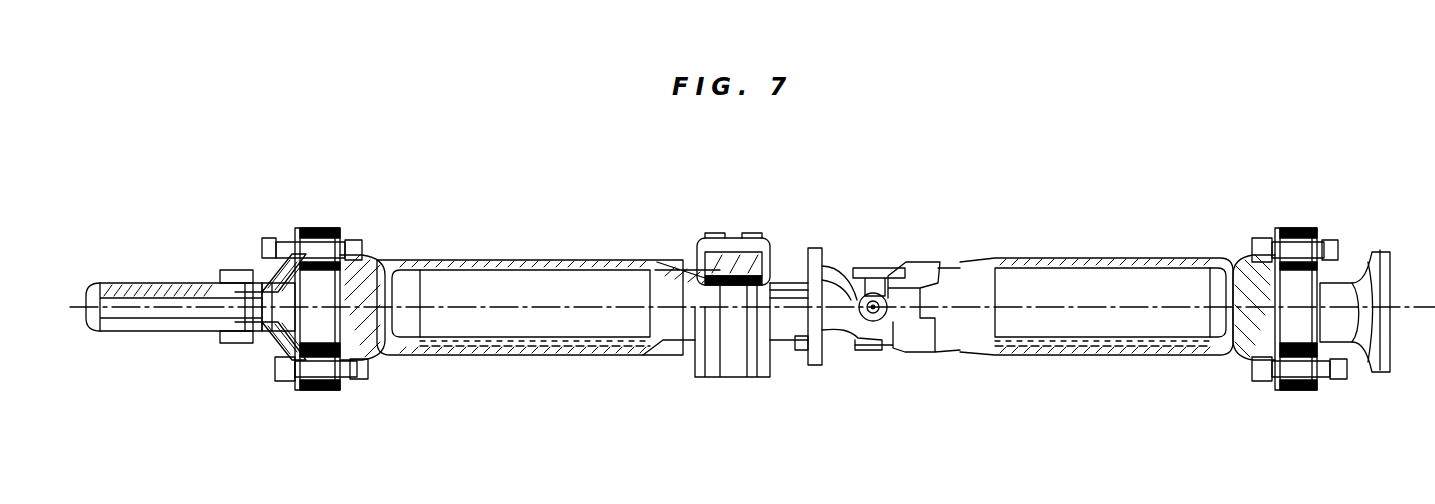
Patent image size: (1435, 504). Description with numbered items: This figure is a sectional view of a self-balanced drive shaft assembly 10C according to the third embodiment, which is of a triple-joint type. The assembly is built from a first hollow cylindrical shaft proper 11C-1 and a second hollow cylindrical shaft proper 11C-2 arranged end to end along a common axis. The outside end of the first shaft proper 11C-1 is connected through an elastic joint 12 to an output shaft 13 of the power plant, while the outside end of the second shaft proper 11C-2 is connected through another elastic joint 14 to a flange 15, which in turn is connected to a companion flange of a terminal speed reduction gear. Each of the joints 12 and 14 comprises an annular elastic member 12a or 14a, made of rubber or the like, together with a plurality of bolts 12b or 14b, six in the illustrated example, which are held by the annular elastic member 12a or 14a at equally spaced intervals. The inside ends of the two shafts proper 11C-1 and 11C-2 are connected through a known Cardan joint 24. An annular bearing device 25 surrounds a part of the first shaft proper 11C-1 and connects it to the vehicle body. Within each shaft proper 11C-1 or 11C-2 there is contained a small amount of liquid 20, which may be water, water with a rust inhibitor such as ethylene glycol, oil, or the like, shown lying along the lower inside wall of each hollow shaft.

The self-balanced drive shaft assembly 10C is at (992, 238).
The first hollow cylindrical shaft proper 11C-1 is at (520, 260).
The second hollow cylindrical shaft proper 11C-2 is at (1122, 258).
The elastic joint 12 is at (330, 213).
The annular elastic member 12a is at (282, 343).
The bolts 12b is at (308, 232).
The output shaft 13 is at (143, 283).
The elastic joint 14 is at (1282, 214).
The annular elastic member 14a is at (1262, 345).
The bolts 14b is at (1318, 232).
The flange 15 is at (1390, 292).
The liquid 20 is at (515, 356).
The Cardan joint 24 is at (882, 257).
The annular bearing device 25 is at (770, 240).